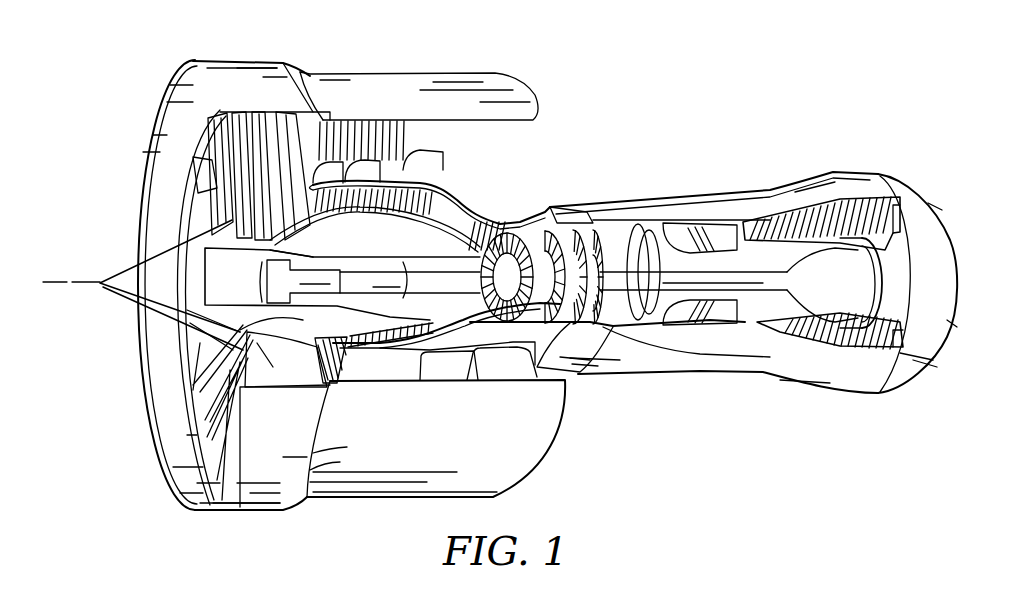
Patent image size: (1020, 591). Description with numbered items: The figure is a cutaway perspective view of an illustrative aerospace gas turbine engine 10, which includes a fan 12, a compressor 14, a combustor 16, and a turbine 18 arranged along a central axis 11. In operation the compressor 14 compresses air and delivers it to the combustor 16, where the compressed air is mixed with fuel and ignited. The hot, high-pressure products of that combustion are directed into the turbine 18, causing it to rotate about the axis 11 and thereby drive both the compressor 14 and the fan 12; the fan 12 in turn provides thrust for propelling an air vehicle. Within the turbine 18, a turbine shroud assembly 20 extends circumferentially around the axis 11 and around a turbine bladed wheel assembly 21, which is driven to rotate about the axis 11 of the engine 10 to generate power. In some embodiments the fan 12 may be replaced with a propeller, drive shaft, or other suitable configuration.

The gas turbine engine 10 is at (783, 78).
The axis 11 is at (72, 281).
The fan 12 is at (173, 160).
The compressor 14 is at (543, 208).
The combustor 16 is at (703, 220).
The turbine 18 is at (813, 200).
The turbine shroud assembly 20 is at (775, 328).
The turbine bladed wheel assembly 21 is at (793, 330).